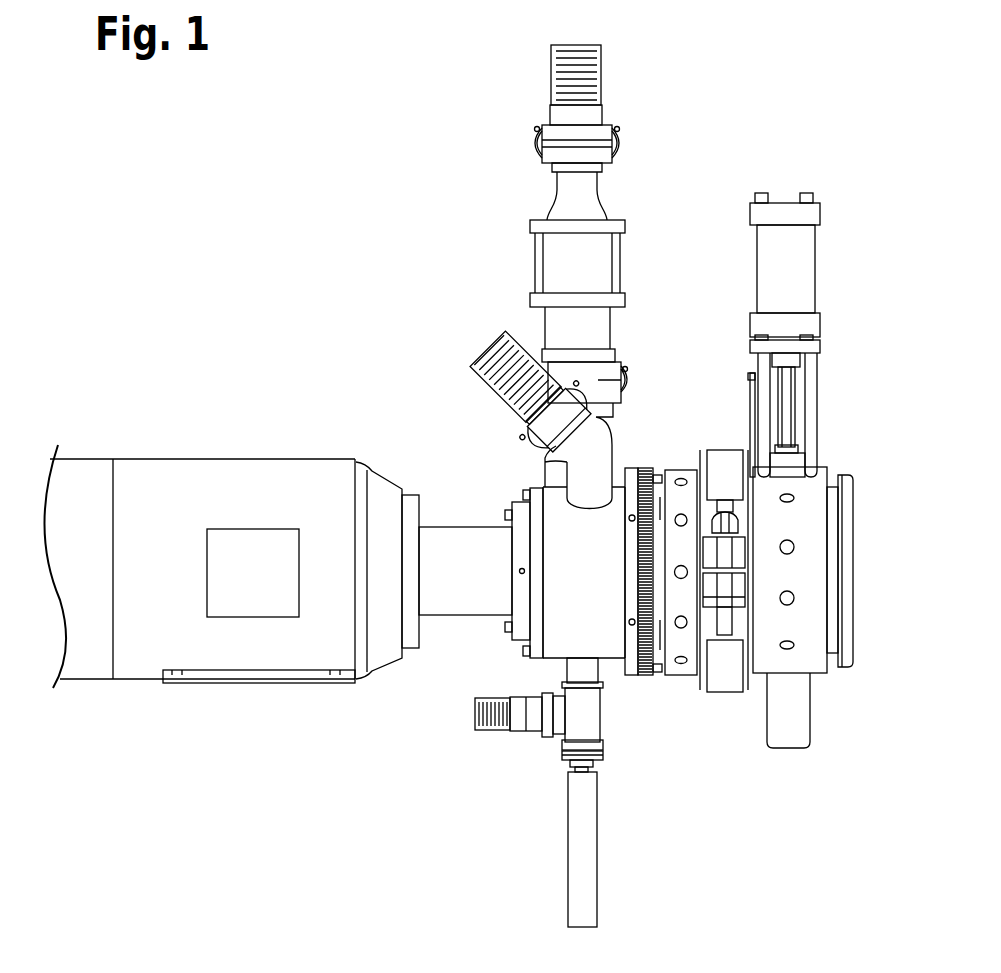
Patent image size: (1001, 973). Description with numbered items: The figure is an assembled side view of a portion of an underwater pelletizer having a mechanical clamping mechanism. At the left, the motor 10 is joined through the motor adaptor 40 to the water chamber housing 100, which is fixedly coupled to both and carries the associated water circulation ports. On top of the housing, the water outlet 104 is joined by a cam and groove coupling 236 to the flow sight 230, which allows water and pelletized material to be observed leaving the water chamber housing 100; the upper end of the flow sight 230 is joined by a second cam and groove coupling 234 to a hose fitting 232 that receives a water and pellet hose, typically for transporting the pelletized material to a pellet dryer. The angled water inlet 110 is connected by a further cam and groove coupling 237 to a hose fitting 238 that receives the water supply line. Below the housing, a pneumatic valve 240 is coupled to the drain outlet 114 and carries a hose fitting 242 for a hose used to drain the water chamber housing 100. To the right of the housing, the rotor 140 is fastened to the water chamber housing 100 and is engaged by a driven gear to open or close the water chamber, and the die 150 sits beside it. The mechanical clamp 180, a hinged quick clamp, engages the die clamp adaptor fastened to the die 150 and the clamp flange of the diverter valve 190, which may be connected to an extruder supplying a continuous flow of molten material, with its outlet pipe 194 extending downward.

The motor 10 is at (172, 459).
The motor adaptor 40 is at (450, 527).
The water chamber housing 100 is at (545, 618).
The water outlet 104 is at (552, 472).
The water inlet 110 is at (613, 463).
The drain outlet 114 is at (600, 672).
The rotor 140 is at (643, 677).
The die 150 is at (688, 677).
The mechanical clamp 180 is at (730, 443).
The diverter valve 190 is at (818, 673).
The outlet pipe 194 is at (793, 750).
The flow sight 230 is at (535, 258).
The hose fitting 232 is at (548, 92).
The cam and groove coupling 234 is at (622, 138).
The cam and groove coupling 236 is at (637, 373).
The cam and groove coupling 237 is at (602, 347).
The hose fitting 238 is at (517, 335).
The pneumatic valve 240 is at (568, 812).
The hose fitting 242 is at (490, 733).